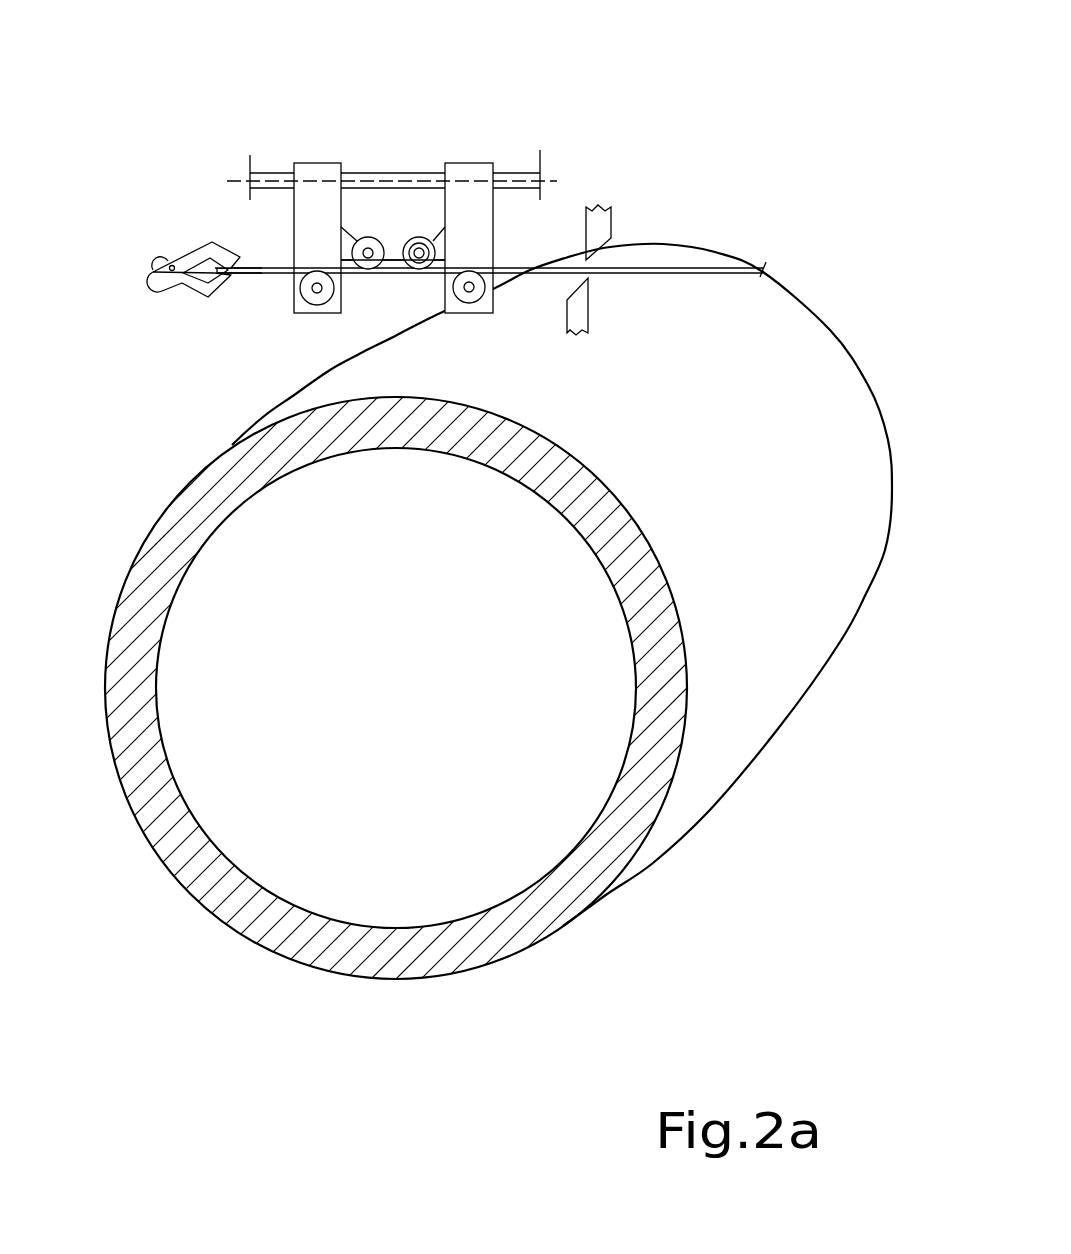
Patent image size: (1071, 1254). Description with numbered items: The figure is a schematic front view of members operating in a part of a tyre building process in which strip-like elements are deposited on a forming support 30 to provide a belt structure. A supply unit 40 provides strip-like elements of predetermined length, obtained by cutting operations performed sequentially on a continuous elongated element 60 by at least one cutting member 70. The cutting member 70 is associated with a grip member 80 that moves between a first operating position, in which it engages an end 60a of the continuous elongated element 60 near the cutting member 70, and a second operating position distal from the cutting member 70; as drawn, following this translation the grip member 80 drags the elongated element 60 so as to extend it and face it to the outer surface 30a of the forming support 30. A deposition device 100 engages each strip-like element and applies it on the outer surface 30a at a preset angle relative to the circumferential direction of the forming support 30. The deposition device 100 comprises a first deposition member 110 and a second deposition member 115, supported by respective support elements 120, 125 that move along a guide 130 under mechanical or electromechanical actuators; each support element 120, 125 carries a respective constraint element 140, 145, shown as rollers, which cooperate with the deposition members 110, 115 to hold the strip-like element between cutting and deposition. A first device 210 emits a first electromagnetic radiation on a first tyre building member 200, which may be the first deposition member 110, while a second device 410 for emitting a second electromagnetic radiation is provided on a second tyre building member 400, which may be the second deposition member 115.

The forming support 30 is at (748, 683).
The outer surface 30a is at (735, 505).
The supply unit 40 is at (632, 307).
The continuous elongated element 60 is at (713, 270).
The end 60a is at (252, 272).
The cutting member 70 is at (582, 300).
The grip member 80 is at (187, 258).
The deposition device 100 is at (470, 140).
The first deposition member 110 is at (368, 243).
The second deposition member 115 is at (419, 253).
The support element 120 is at (313, 240).
The support element 125 is at (478, 238).
The guide shaft 130 is at (518, 177).
The constraint element 140 is at (312, 289).
The constraint element 145 is at (477, 295).
The first tyre building member 200 is at (372, 256).
The first device 210 is at (371, 268).
The second tyre building member 400 is at (419, 250).
The second device 410 is at (421, 250).